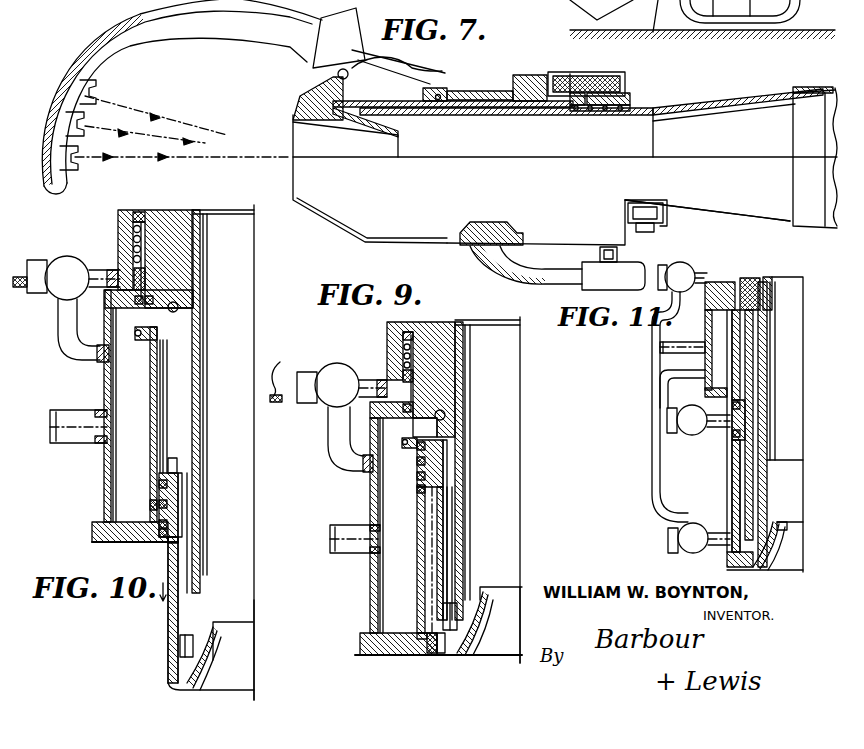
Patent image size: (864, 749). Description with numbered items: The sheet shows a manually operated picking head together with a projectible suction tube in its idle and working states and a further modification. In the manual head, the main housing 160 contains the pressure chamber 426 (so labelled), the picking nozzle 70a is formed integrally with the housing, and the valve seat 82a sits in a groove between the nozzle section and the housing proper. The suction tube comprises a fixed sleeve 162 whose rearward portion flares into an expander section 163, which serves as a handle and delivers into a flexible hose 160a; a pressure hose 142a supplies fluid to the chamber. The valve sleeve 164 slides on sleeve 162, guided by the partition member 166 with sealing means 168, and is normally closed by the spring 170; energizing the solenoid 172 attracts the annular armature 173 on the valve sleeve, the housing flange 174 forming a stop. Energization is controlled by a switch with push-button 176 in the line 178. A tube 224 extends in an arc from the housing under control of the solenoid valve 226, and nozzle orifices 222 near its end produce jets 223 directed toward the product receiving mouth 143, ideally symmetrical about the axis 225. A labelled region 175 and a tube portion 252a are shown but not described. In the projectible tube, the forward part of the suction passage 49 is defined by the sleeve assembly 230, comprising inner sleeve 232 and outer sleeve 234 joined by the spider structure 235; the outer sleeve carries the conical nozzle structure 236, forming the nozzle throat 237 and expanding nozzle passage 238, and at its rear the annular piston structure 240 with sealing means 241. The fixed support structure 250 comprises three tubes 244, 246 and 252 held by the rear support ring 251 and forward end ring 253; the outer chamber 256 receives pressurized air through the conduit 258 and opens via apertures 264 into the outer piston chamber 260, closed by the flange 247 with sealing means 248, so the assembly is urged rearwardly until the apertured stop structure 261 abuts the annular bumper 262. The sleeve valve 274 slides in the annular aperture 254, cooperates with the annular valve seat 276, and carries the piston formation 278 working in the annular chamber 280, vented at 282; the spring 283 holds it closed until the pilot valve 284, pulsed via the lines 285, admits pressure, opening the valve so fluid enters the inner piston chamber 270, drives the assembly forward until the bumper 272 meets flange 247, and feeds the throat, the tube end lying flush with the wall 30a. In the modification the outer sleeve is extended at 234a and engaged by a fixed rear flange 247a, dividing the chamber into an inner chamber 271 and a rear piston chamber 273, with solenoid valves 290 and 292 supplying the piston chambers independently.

In FIG. 7, the tube 224 is at (138, 56).
In FIG. 7, the nozzle orifices 222 is at (74, 172).
In FIG. 7, the jets 223 is at (140, 108).
In FIG. 7, the axis 225 is at (232, 160).
In FIG. 7, the solenoid valve 226 is at (352, 20).
In FIG. 7, the valve seat 82a is at (337, 85).
In FIG. 7, the picking nozzle 70a is at (293, 128).
In FIG. 7, the air chamber 426 is at (402, 96).
In FIG. 7, the valve sleeve 164 is at (413, 113).
In FIG. 7, the fixed sleeve 162 is at (513, 115).
In FIG. 7, the expander section 163 is at (766, 96).
In FIG. 7, the flexible hose 160a is at (825, 190).
In FIG. 7, the housing bottom wall 175 is at (650, 211).
In FIG. 7, the sealing means 168 is at (438, 89).
In FIG. 7, the partition member 166 is at (483, 90).
In FIG. 7, the main housing 160 is at (528, 70).
In FIG. 7, the annular armature 173 is at (571, 73).
In FIG. 7, the solenoid 172 is at (598, 73).
In FIG. 7, the housing flange 174 is at (626, 90).
In FIG. 7, the spring 170 is at (636, 101).
In FIG. 7, the ski runner 143 is at (783, 12).
In FIG. 7, the line 178 is at (622, 245).
In FIG. 7, the push-button 176 is at (660, 231).
In FIG. 7, the discharge tube 142a is at (553, 265).
In FIG. 10, the fixed housing and support structure 250 is at (186, 204).
In FIG. 9, the fixed housing and support structure 250 is at (448, 320).
In FIG. 10, the rear support ring 251 is at (187, 237).
In FIG. 9, the rear support ring 251 is at (443, 355).
In FIG. 11, the rear support ring 251 is at (777, 270).
In FIG. 10, the spring 283 is at (145, 214).
In FIG. 9, the spring 283 is at (391, 322).
In FIG. 10, the vent 282 is at (118, 217).
In FIG. 9, the vent 282 is at (387, 328).
In FIG. 10, the annular chamber 280 is at (133, 243).
In FIG. 9, the annular chamber 280 is at (398, 335).
In FIG. 10, the piston formation 278 is at (133, 260).
In FIG. 9, the piston formation 278 is at (400, 360).
In FIG. 10, the annular aperture 254 is at (116, 312).
In FIG. 9, the annular aperture 254 is at (407, 423).
In FIG. 10, the annular bumper 262 is at (177, 307).
In FIG. 9, the annular bumper 262 is at (440, 417).
In FIG. 10, the inner sleeve 232 is at (203, 595).
In FIG. 9, the inner sleeve 232 is at (463, 560).
In FIG. 11, the inner sleeve 232 is at (787, 504).
In FIG. 10, the inner fixed tube 244 is at (204, 345).
In FIG. 9, the inner fixed tube 244 is at (467, 537).
In FIG. 11, the inner fixed tube 244 is at (773, 317).
In FIG. 10, the tube 252 is at (107, 477).
In FIG. 9, the tube 252 is at (370, 592).
In FIG. 10, the outer chamber 256 is at (138, 482).
In FIG. 9, the outer chamber 256 is at (393, 600).
In FIG. 11, the outer chamber 256 is at (653, 383).
In FIG. 10, the fixed tube 246 is at (150, 395).
In FIG. 9, the fixed tube 246 is at (417, 553).
In FIG. 11, the fixed tube 246 is at (726, 477).
In FIG. 10, the annular valve seat 276 is at (137, 343).
In FIG. 9, the annular valve seat 276 is at (403, 450).
In FIG. 10, the apertured stop structure 261 is at (173, 463).
In FIG. 9, the apertured stop structure 261 is at (437, 433).
In FIG. 11, the apertured stop structure 261 is at (756, 283).
In FIG. 10, the sealing means 241 is at (187, 470).
In FIG. 9, the sealing means 241 is at (455, 447).
In FIG. 10, the annular piston structure 240 is at (167, 497).
In FIG. 9, the annular piston structure 240 is at (443, 457).
In FIG. 11, the annular piston structure 240 is at (747, 420).
In FIG. 10, the flange 247 is at (163, 517).
In FIG. 9, the flange 247 is at (430, 655).
In FIG. 11, the flange 247 is at (728, 562).
In FIG. 10, the sealing means 248 is at (173, 535).
In FIG. 9, the sealing means 248 is at (437, 655).
In FIG. 10, the forward end ring 253 is at (173, 543).
In FIG. 9, the forward end ring 253 is at (395, 656).
In FIG. 10, the inner piston chamber 270 is at (190, 563).
In FIG. 9, the inner piston chamber 270 is at (453, 518).
In FIG. 10, the suction passage 49 is at (241, 578).
In FIG. 9, the suction passage 49 is at (508, 389).
In FIG. 10, the apertures 264 is at (103, 540).
In FIG. 9, the apertures 264 is at (368, 645).
In FIG. 10, the wall 30a is at (97, 530).
In FIG. 9, the wall 30a is at (363, 655).
In FIG. 10, the bumper 272 is at (160, 515).
In FIG. 9, the bumper 272 is at (420, 482).
In FIG. 10, the conduit 258 is at (62, 446).
In FIG. 9, the conduit 258 is at (333, 543).
In FIG. 11, the conduit 258 is at (677, 362).
In FIG. 10, the solenoid operated three-way pilot valve 284 is at (58, 288).
In FIG. 9, the solenoid operated three-way pilot valve 284 is at (330, 401).
In FIG. 11, the solenoid operated three-way pilot valve 284 is at (688, 268).
In FIG. 10, the lines 285 is at (19, 286).
In FIG. 9, the lines 285 is at (284, 375).
In FIG. 10, the sleeve valve 274 is at (143, 313).
In FIG. 9, the sleeve valve 274 is at (407, 420).
In FIG. 11, the sleeve valve 274 is at (750, 287).
In FIG. 10, the outer sleeve 234 is at (170, 622).
In FIG. 9, the outer sleeve 234 is at (443, 570).
In FIG. 11, the outer sleeve 234 is at (748, 457).
In FIG. 10, the spider structure 235 is at (186, 647).
In FIG. 9, the spider structure 235 is at (457, 654).
In FIG. 10, the expanding nozzle passage 238 is at (215, 620).
In FIG. 9, the expanding nozzle passage 238 is at (487, 597).
In FIG. 10, the conical nozzle structure 236 is at (216, 643).
In FIG. 9, the conical nozzle structure 236 is at (487, 613).
In FIG. 10, the nozzle throat 237 is at (207, 650).
In FIG. 9, the nozzle throat 237 is at (480, 632).
In FIG. 11, the nozzle throat 237 is at (787, 558).
In FIG. 10, the projectible sleeve assembly 230 is at (255, 638).
In FIG. 9, the projectible sleeve assembly 230 is at (490, 657).
In FIG. 11, the projectible sleeve assembly 230 is at (770, 480).
In FIG. 9, the outer piston chamber 260 is at (409, 560).
In FIG. 11, the outer piston chamber 260 is at (742, 447).
In FIG. 11, the inner chamber 271 is at (777, 307).
In FIG. 11, the cylinder stub 252a is at (697, 332).
In FIG. 11, the extension 234a is at (773, 333).
In FIG. 11, the fixed rear flange 247a is at (753, 370).
In FIG. 11, the rear piston chamber 273 is at (757, 407).
In FIG. 11, the three-way solenoid valve 292 is at (688, 433).
In FIG. 11, the three-way solenoid valve 290 is at (683, 548).